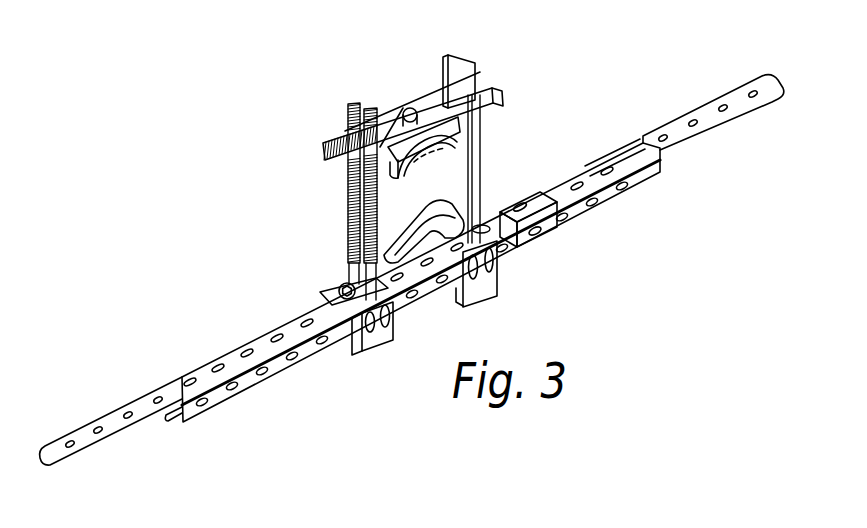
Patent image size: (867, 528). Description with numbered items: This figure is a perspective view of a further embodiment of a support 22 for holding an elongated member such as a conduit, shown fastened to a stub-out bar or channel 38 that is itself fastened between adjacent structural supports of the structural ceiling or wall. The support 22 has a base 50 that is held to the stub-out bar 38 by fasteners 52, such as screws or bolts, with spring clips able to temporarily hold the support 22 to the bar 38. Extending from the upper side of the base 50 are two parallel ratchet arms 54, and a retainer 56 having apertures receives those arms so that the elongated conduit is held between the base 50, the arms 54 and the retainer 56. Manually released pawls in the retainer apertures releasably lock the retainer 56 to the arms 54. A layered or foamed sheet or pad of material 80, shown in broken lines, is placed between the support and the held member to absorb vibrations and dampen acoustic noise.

The support 22 is at (298, 211).
The stub-out bar or channel 38 is at (546, 238).
The base 50 is at (500, 210).
The fasteners 52 is at (332, 292).
The ratchet arms 54 is at (347, 186).
The retainer 56 is at (493, 107).
The layered or foamed sheets or pads of material 80 is at (420, 178).